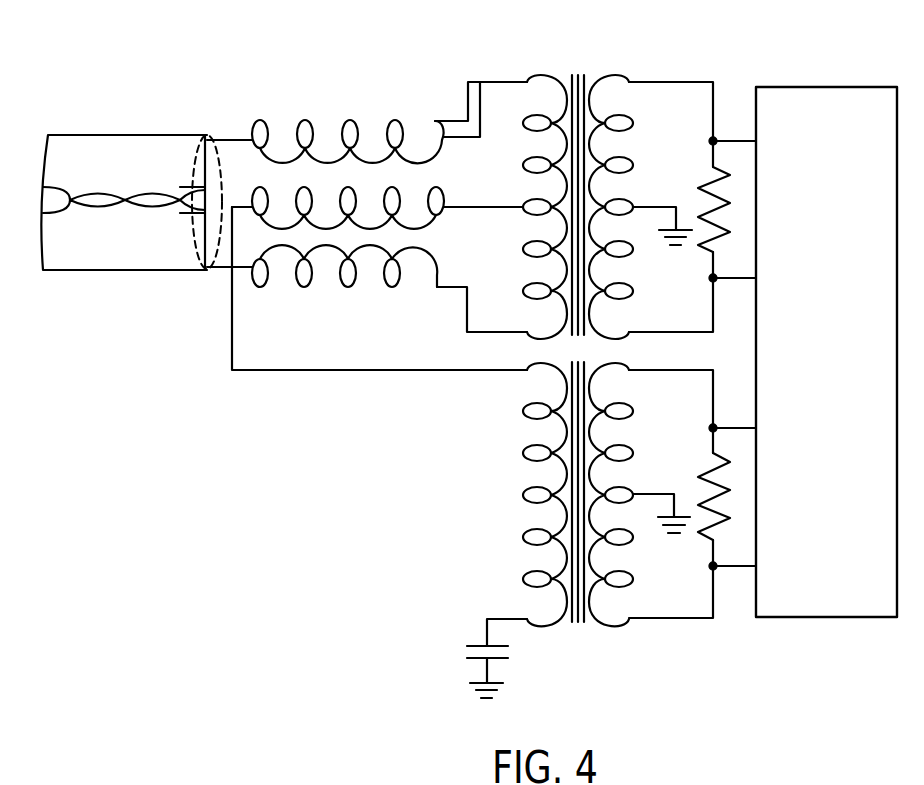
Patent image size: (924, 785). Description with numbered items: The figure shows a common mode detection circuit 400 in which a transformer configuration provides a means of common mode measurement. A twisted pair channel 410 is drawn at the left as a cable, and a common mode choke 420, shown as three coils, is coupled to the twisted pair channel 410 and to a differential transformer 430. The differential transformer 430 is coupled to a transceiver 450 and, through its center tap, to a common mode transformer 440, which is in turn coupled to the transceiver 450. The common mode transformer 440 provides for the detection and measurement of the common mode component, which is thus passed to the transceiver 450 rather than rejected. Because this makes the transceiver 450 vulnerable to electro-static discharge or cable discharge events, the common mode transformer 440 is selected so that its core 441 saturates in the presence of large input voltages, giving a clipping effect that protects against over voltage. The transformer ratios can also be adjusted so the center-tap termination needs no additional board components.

The common mode detection circuit 400 is at (469, 354).
The twisted pair channel 410 is at (112, 108).
The common mode choke 420 is at (330, 94).
The differential transformer 430 is at (580, 52).
The common mode transformer 440 is at (559, 535).
The core 441 is at (577, 462).
The transceiver 450 is at (828, 86).